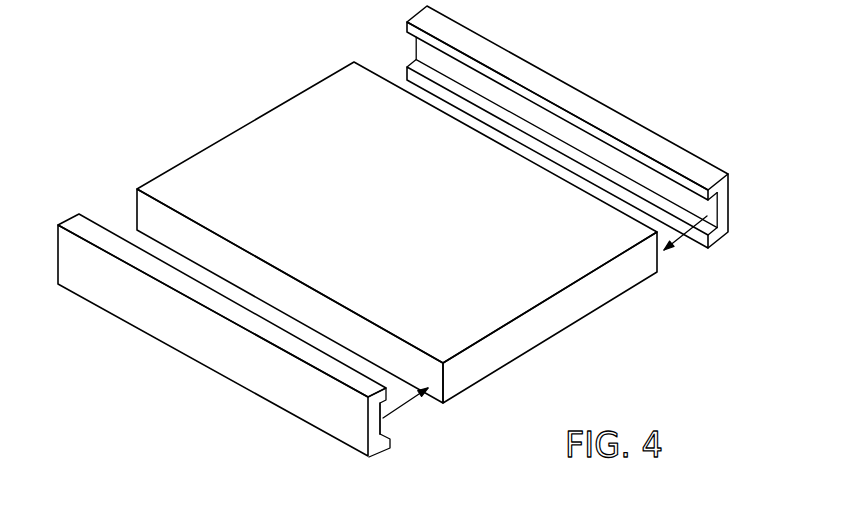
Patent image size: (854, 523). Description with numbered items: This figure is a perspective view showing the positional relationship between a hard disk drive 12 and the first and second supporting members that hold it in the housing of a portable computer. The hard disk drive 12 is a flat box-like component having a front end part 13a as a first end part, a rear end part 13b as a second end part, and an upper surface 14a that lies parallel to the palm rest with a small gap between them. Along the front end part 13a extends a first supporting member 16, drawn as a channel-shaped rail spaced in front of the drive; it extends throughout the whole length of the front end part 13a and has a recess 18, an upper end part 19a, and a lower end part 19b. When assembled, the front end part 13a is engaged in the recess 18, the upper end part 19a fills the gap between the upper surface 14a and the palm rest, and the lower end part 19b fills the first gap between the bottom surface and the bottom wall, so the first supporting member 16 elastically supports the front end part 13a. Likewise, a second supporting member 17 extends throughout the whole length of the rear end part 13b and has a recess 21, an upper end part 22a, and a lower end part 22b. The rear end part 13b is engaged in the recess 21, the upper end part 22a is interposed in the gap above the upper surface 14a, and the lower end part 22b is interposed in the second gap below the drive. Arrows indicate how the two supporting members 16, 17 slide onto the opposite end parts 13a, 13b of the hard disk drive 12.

The hard disk drive 12 is at (413, 232).
The front end part 13a is at (167, 197).
The rear end part 13b is at (613, 225).
The upper surface 14a is at (426, 214).
The first supporting member 16 is at (253, 347).
The second supporting member 17 is at (585, 135).
The recess 18 is at (383, 432).
The upper end part 19a is at (312, 357).
The lower end part 19b is at (388, 447).
The recess 21 is at (707, 212).
The upper end part 22a is at (580, 95).
The lower end part 22b is at (562, 160).